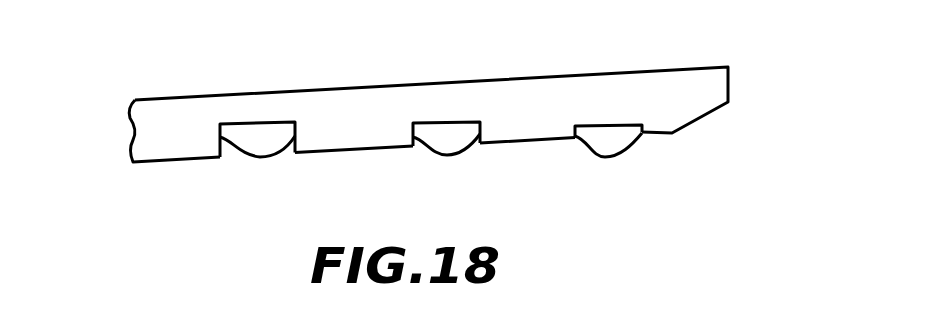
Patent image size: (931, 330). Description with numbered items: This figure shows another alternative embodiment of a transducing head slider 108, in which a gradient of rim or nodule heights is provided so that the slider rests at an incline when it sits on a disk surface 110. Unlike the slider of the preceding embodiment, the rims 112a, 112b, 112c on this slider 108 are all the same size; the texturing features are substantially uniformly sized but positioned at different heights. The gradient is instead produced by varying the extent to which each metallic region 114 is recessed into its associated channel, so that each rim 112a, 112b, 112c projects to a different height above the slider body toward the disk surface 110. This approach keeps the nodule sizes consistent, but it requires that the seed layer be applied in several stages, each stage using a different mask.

The transducing head slider 108 is at (437, 95).
The disk surface 110 is at (155, 163).
The rim 112a is at (613, 147).
The rim 112b is at (450, 143).
The rim 112c is at (262, 157).
The metallic region 114 is at (255, 137).